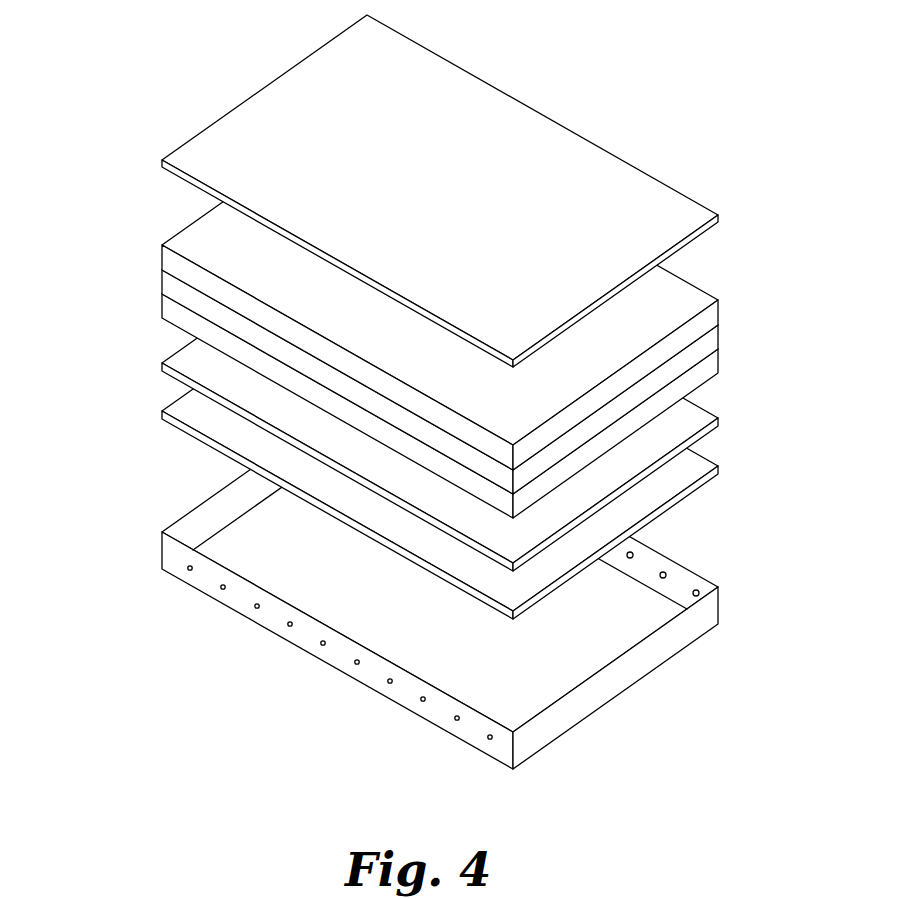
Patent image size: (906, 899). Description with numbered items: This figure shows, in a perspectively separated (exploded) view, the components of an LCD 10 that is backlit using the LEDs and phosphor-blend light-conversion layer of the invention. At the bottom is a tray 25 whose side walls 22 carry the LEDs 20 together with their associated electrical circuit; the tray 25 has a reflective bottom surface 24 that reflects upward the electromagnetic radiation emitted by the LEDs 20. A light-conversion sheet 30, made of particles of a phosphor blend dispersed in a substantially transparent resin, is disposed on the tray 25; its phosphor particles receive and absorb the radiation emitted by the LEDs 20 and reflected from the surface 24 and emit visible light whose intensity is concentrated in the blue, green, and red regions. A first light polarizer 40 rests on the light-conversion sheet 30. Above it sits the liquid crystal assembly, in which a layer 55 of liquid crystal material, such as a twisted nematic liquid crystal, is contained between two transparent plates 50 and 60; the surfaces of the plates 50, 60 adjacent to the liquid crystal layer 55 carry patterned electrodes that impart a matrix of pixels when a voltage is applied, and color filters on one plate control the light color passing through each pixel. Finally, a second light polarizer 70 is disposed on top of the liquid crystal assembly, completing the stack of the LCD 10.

The LCD 10 is at (163, 62).
The LEDs 20 is at (190, 568).
The side walls 22 is at (503, 743).
The reflective bottom surface 24 is at (605, 640).
The tray 25 is at (567, 731).
The light-conversion sheet 30 is at (162, 412).
The first light polarizer 40 is at (162, 363).
The transparent plate 50 is at (162, 302).
The liquid crystal layer 55 is at (162, 285).
The transparent plate 60 is at (162, 247).
The second light polarizer 70 is at (162, 160).